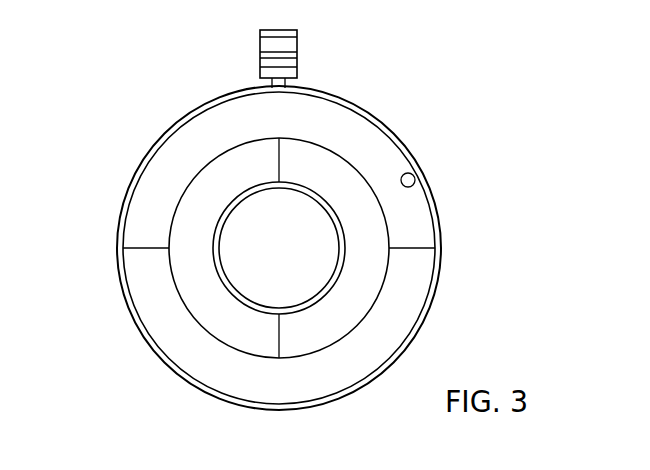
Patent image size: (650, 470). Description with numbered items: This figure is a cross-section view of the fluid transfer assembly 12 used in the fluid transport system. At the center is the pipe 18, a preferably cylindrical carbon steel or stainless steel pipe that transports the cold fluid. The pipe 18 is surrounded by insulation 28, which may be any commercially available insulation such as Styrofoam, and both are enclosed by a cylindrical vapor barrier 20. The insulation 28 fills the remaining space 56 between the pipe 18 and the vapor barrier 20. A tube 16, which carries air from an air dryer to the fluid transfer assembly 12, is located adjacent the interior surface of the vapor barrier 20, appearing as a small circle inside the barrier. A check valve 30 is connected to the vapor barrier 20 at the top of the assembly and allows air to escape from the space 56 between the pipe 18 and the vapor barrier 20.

The fluid transfer assembly 12 is at (297, 219).
The tube 16 is at (415, 180).
The pipe 18 is at (330, 288).
The vapor barrier 20 is at (440, 217).
The insulation 28 is at (157, 191).
The check valve 30 is at (262, 52).
The space 56 is at (366, 158).